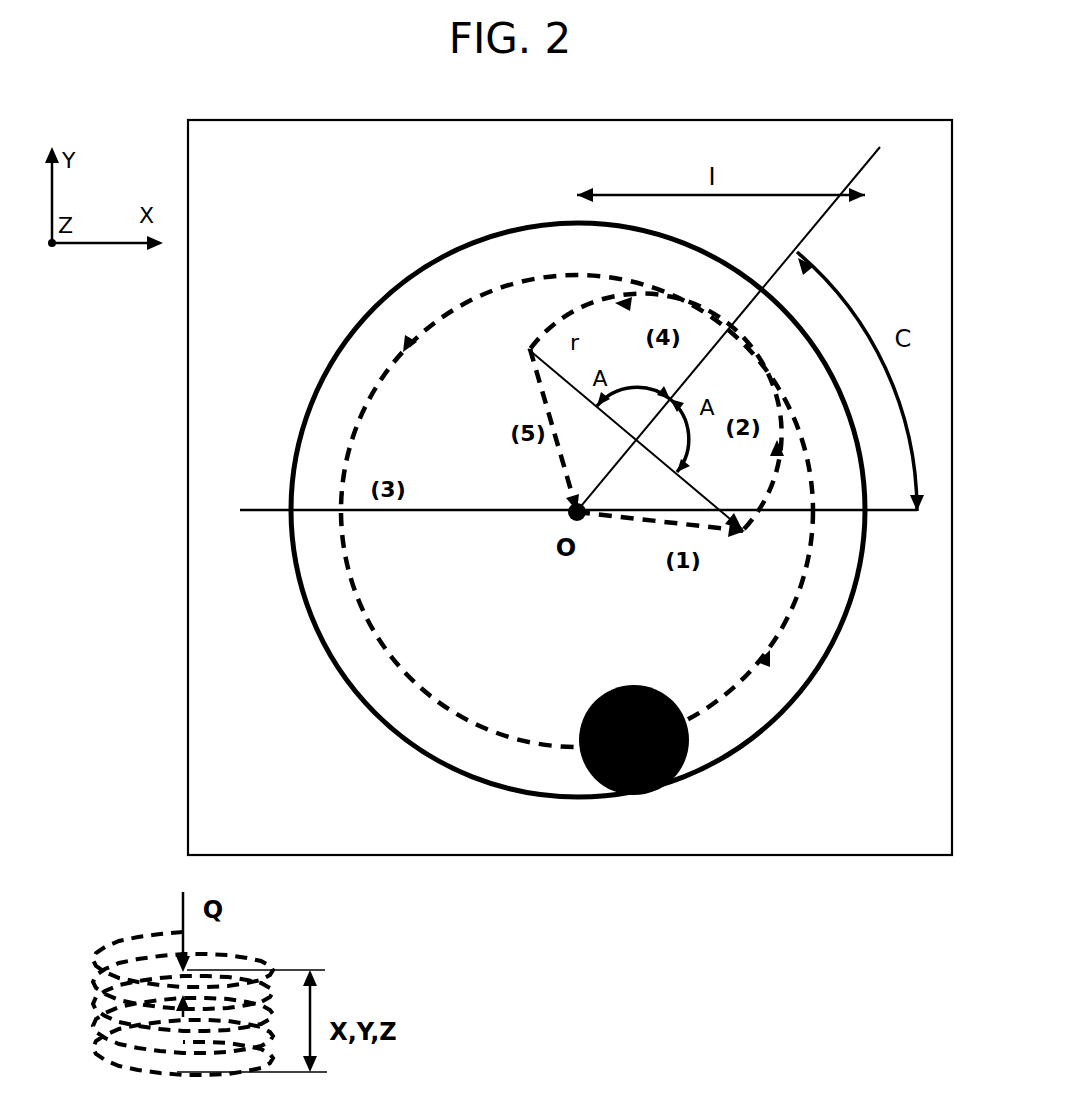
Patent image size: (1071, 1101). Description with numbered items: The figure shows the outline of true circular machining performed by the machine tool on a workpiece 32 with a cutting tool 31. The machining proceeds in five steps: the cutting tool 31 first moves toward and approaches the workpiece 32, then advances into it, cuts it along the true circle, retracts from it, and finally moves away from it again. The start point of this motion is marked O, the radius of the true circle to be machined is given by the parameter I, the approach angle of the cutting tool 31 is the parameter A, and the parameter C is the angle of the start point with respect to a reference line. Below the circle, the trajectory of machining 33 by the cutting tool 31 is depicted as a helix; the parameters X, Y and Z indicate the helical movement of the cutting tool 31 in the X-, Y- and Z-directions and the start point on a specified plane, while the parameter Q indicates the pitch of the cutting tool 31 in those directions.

The cutting tool 31 is at (641, 684).
The workpiece 32 is at (371, 118).
The trajectory of machining 33 is at (300, 934).